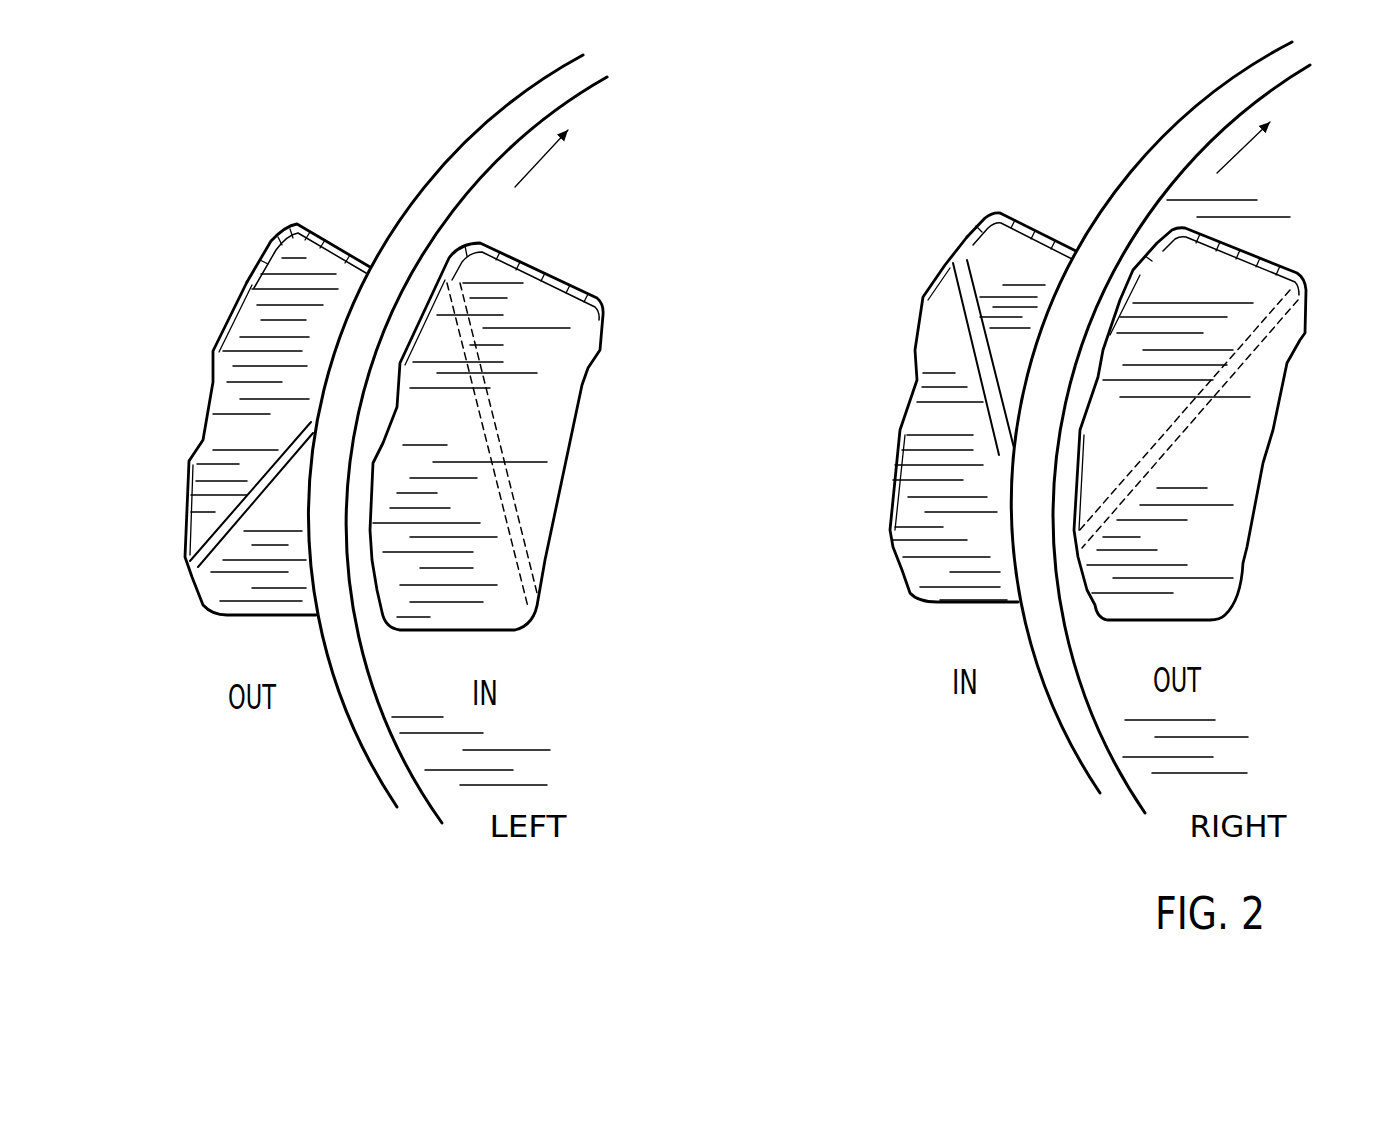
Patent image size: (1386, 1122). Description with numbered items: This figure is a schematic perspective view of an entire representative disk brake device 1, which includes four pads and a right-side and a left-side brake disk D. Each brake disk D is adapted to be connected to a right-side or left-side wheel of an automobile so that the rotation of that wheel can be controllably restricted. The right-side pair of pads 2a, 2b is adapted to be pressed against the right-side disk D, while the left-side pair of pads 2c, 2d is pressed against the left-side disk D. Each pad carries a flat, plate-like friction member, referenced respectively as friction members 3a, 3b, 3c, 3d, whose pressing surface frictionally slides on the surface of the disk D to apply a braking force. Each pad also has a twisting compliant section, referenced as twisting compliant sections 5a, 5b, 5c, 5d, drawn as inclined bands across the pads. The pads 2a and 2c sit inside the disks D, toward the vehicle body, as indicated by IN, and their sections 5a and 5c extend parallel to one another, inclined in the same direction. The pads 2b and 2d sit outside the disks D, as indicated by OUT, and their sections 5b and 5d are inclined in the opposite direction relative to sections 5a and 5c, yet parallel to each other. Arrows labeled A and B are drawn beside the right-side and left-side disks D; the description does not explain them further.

The disk brake device 1 is at (385, 113).
The pad 2a is at (1000, 203).
The pad 2b is at (1313, 267).
The pad 2c is at (575, 270).
The pad 2d is at (310, 213).
The friction member 3a is at (1033, 267).
The friction member 3b is at (1268, 370).
The friction member 3c is at (550, 393).
The friction member 3d is at (325, 282).
The twisting compliant section 5a is at (983, 318).
The twisting compliant section 5b is at (1175, 441).
The twisting compliant section 5c is at (510, 493).
The twisting compliant section 5d is at (269, 471).
The direction A is at (1253, 147).
The direction B is at (550, 158).
The brake disk D is at (365, 742).